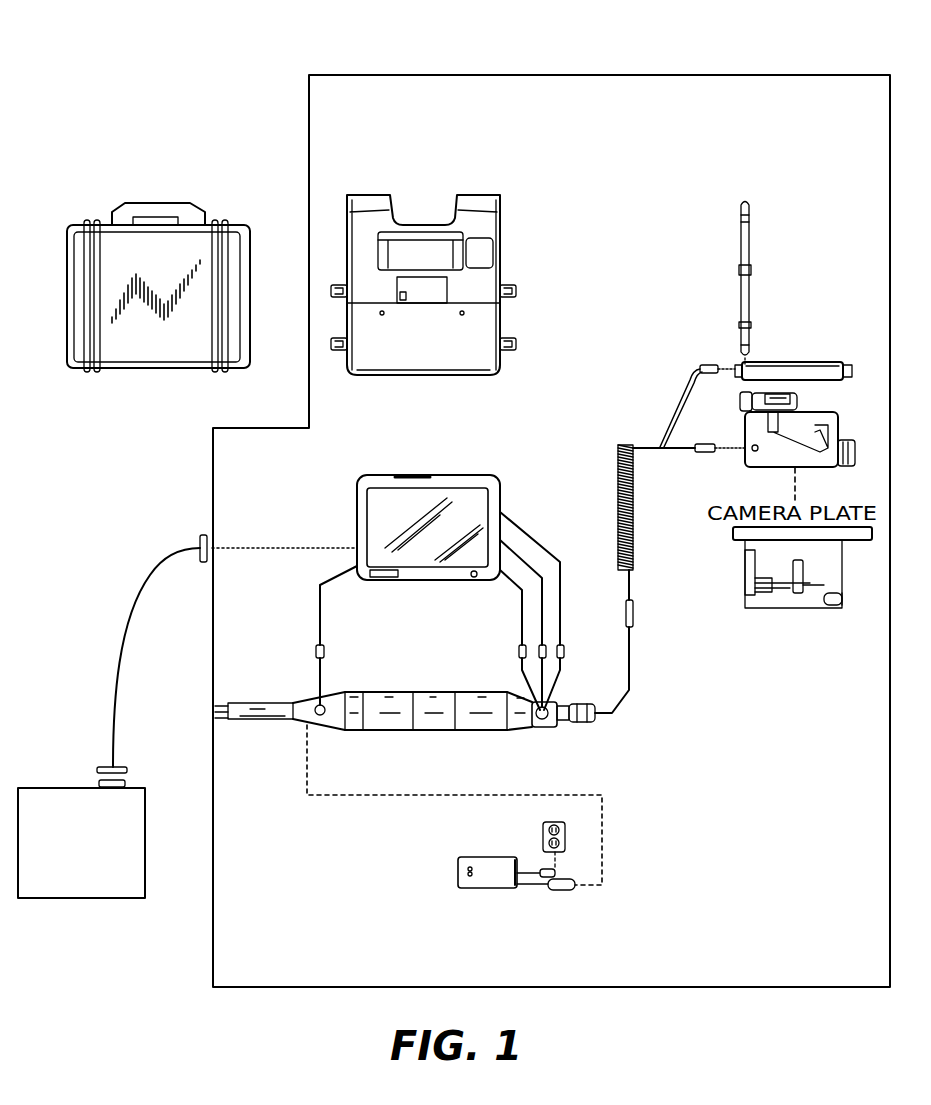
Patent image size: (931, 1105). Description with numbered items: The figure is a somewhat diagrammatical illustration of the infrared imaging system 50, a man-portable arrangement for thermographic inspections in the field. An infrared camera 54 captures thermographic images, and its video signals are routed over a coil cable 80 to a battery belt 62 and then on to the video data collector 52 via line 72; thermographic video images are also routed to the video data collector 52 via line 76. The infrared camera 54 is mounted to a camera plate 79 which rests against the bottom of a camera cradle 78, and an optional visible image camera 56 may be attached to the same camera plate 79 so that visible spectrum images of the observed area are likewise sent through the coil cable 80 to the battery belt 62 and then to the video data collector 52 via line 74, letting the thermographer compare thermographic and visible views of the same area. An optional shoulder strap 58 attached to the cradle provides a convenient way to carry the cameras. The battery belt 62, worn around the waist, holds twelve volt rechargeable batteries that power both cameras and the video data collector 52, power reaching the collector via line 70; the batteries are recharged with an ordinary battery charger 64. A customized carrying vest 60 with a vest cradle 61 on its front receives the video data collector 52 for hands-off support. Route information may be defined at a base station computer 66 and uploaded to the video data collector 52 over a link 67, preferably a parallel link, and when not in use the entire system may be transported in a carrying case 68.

The infrared imaging system 50 is at (473, 73).
The video data collector 52 is at (420, 476).
The infrared camera 54 is at (840, 428).
The visible image camera 56 is at (800, 360).
The shoulder strap 58 is at (751, 240).
The carrying vest 60 is at (443, 269).
The vest cradle 61 is at (443, 256).
The battery belt 62 is at (390, 693).
The battery charger 64 is at (458, 876).
The base station computer 66 is at (145, 812).
The link 67 is at (129, 603).
The carrying case 68 is at (241, 222).
The line 70 is at (320, 608).
The line 72 is at (522, 617).
The line 74 is at (545, 600).
The line 76 is at (528, 540).
The camera cradle 78 is at (838, 578).
The camera plate 79 is at (733, 531).
The coil cable 80 is at (633, 520).